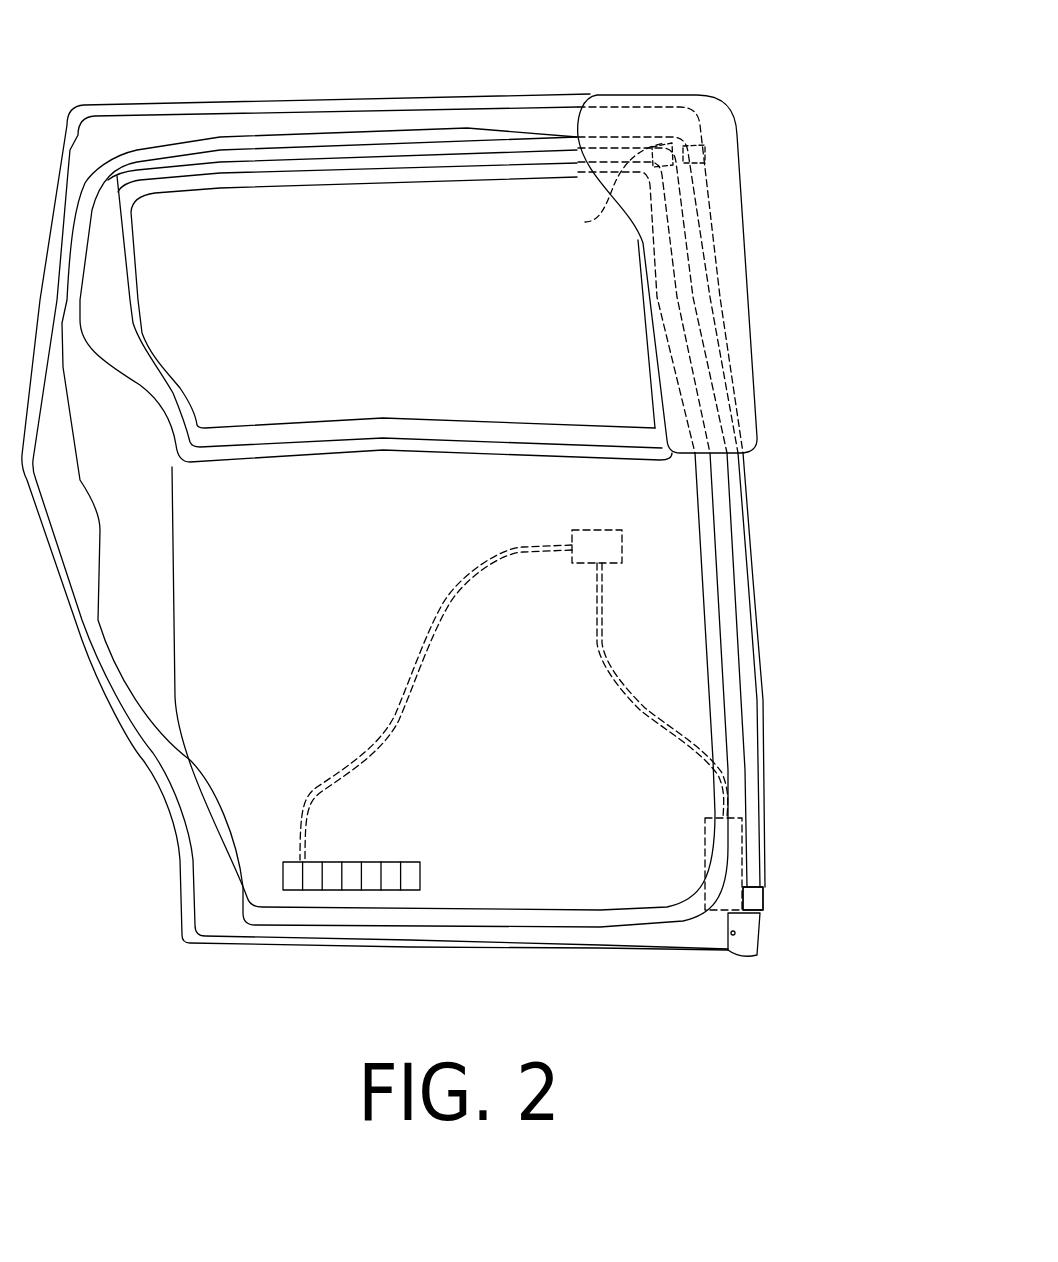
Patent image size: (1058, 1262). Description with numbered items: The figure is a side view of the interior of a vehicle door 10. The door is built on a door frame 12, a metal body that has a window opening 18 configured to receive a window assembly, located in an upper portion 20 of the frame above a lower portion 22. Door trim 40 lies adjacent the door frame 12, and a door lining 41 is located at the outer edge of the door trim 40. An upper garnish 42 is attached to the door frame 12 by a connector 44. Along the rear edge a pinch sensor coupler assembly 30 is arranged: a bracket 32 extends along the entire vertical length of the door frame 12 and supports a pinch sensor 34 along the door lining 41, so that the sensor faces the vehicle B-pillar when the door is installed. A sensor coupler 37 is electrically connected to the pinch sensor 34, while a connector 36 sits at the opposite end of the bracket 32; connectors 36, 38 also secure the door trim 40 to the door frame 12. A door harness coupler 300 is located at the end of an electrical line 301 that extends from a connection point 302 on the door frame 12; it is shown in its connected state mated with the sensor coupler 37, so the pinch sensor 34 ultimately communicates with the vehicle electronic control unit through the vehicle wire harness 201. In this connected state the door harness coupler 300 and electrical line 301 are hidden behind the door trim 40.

The vehicle door 10 is at (324, 72).
The door frame 12 is at (142, 104).
The window opening 18 is at (251, 294).
The upper portion 20 is at (798, 84).
The lower portion 22 is at (872, 866).
The pinch sensor coupler assembly 30 is at (790, 193).
The bracket 32 is at (748, 530).
The pinch sensor 34 is at (750, 490).
The connector 36 is at (688, 140).
The sensor coupler 37 is at (763, 897).
The connector 38 is at (760, 933).
The door trim 40 is at (288, 905).
The door lining 41 is at (735, 727).
The upper garnish 42 is at (750, 305).
The connector 44 is at (585, 222).
The vehicle wire harness 201 is at (385, 860).
The door harness coupler 300 is at (705, 835).
The electrical line 301 is at (598, 655).
The connection point 302 is at (595, 530).